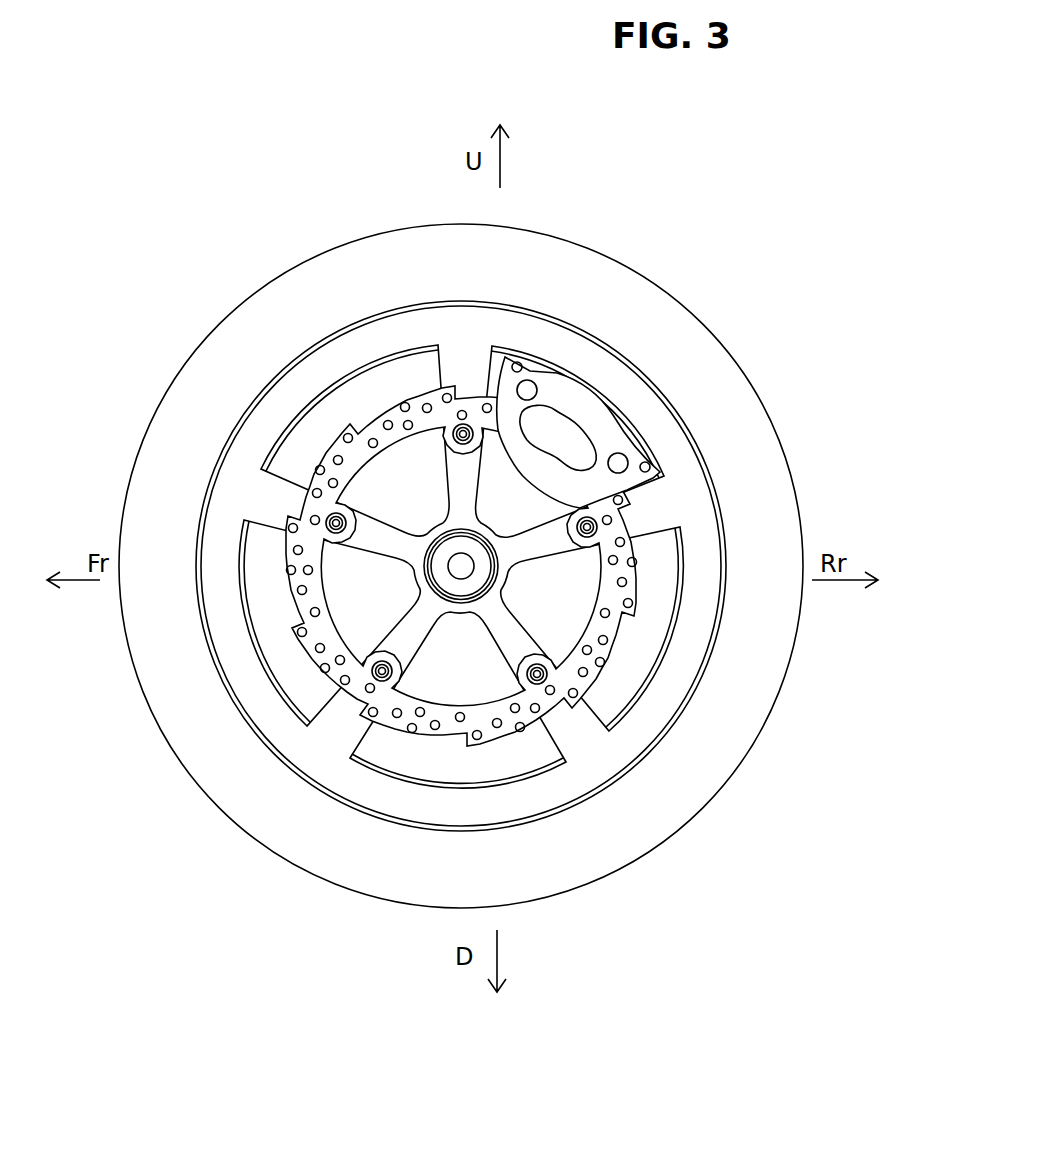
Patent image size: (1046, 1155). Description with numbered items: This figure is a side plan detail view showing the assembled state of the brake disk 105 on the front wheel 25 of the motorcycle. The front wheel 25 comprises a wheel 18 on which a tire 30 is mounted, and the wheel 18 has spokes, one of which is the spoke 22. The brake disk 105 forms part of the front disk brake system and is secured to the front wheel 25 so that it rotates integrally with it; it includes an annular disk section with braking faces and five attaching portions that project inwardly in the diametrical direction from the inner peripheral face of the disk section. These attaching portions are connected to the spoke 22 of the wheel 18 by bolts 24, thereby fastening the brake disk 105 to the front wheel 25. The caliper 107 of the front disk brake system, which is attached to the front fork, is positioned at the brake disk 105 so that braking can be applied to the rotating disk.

The front wheel 25 is at (268, 165).
The tire 30 is at (298, 308).
The wheel 18 is at (697, 683).
The spoke 22 is at (545, 768).
The bolt 24 is at (452, 386).
The brake disk 105 is at (656, 602).
The caliper 107 is at (590, 402).